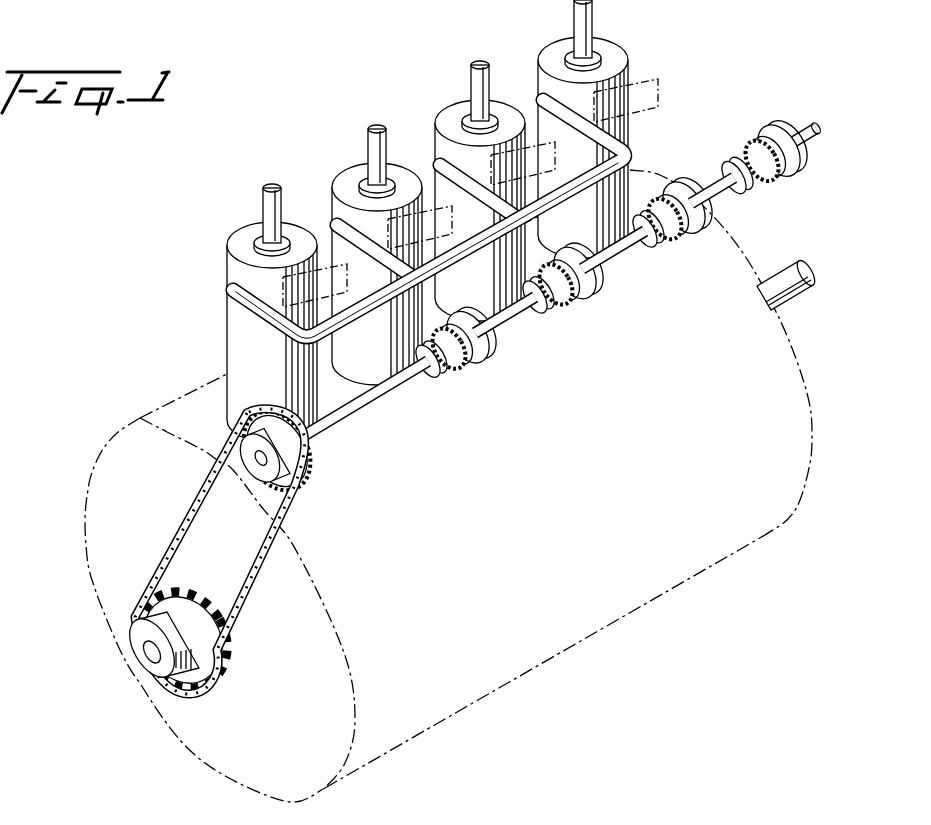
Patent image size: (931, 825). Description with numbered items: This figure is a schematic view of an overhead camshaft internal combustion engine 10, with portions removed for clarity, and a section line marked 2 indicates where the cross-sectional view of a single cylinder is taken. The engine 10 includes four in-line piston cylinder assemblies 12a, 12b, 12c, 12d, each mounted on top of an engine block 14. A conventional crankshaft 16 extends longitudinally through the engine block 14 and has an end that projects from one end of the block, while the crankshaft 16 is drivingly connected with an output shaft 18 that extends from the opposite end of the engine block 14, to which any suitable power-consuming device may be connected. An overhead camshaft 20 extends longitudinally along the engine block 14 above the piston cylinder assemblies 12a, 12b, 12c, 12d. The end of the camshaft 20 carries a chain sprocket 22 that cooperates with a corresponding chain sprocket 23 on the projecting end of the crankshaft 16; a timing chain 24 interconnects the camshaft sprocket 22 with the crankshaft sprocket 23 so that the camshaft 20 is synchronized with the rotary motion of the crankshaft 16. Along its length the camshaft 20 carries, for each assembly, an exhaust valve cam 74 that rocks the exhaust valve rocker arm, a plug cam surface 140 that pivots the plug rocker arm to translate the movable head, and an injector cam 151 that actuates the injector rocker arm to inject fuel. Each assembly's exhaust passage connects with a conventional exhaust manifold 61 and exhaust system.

The overhead camshaft internal combustion engine 10 is at (426, 486).
The piston cylinder assembly 12a is at (195, 273).
The piston cylinder assembly 12b is at (318, 172).
The piston cylinder assembly 12c is at (436, 116).
The piston cylinder assembly 12d is at (616, 52).
The engine block 14 is at (567, 642).
The crankshaft 16 is at (145, 652).
The output shaft 18 is at (806, 262).
The overhead camshaft 20 is at (569, 281).
The chain sprocket 22 is at (302, 490).
The chain sprocket 23 is at (182, 692).
The timing chain 24 is at (150, 578).
The exhaust manifold 61 is at (407, 372).
The exhaust valve cam 74 is at (738, 194).
The plug cam surface 140 is at (749, 140).
The injector cam 151 is at (803, 163).
The section line 2- 2 is at (440, 48).